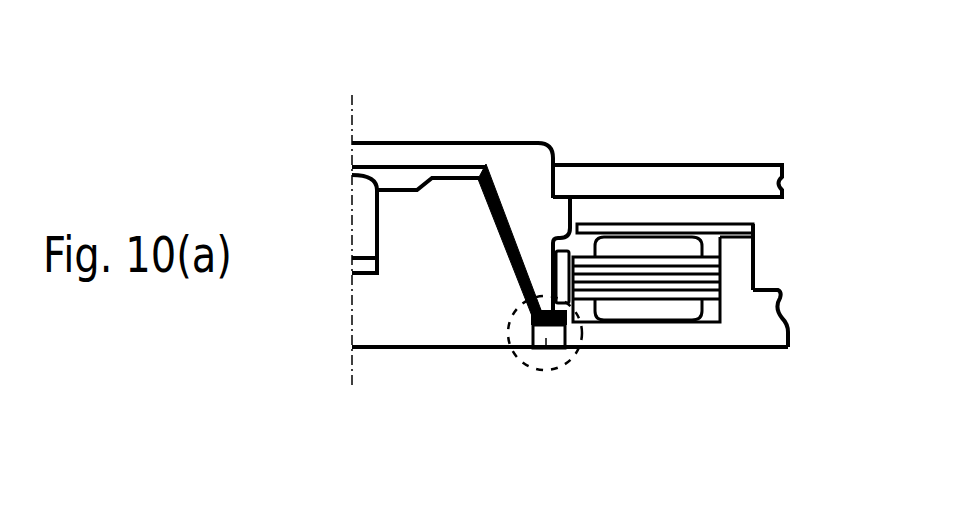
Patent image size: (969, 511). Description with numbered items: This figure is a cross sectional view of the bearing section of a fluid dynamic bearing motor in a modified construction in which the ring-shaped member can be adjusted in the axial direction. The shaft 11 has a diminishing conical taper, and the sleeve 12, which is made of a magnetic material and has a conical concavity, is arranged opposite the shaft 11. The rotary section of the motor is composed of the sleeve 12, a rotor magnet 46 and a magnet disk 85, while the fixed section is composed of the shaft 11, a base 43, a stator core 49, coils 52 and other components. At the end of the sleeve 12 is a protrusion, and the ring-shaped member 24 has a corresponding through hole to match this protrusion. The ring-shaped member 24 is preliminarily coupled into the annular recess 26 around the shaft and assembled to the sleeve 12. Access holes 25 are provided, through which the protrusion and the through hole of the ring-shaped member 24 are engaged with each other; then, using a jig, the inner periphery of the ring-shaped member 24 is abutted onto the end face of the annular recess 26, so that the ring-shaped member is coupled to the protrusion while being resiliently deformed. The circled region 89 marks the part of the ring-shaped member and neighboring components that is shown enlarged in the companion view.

The shaft 11 is at (437, 267).
The sleeve 12 is at (530, 225).
The ring-shaped member 24 is at (532, 318).
The access holes 25 is at (546, 338).
The annular recess 26 is at (527, 313).
The base 43 is at (598, 340).
The rotor magnet 46 is at (577, 257).
The stator core 49 is at (712, 285).
The coils 52 is at (642, 307).
The magnet disk 85 is at (673, 173).
The part of the ring-shaped member and other components 89 is at (550, 367).